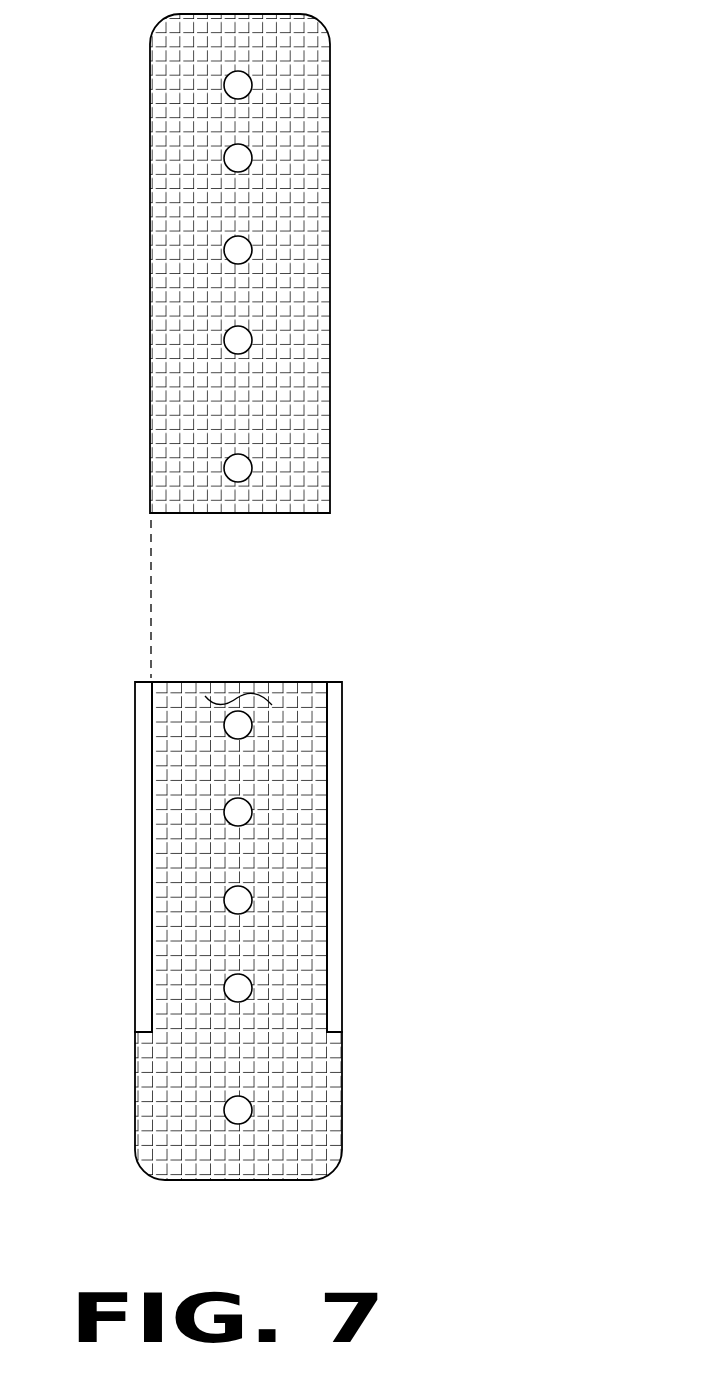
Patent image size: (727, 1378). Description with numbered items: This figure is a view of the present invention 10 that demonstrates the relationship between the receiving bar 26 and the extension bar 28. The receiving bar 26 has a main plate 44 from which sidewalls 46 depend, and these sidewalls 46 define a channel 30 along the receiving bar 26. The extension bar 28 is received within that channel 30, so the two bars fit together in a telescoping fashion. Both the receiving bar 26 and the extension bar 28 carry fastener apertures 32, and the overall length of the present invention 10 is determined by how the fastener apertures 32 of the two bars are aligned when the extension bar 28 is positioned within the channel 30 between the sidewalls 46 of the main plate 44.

The present invention 10 is at (535, 140).
The receiving bar 26 is at (283, 682).
The extension bar 28 is at (333, 312).
The channel 30 is at (237, 697).
The fastener apertures 32 is at (232, 166).
The main plate 44 is at (135, 1066).
The sidewalls 46 is at (135, 918).